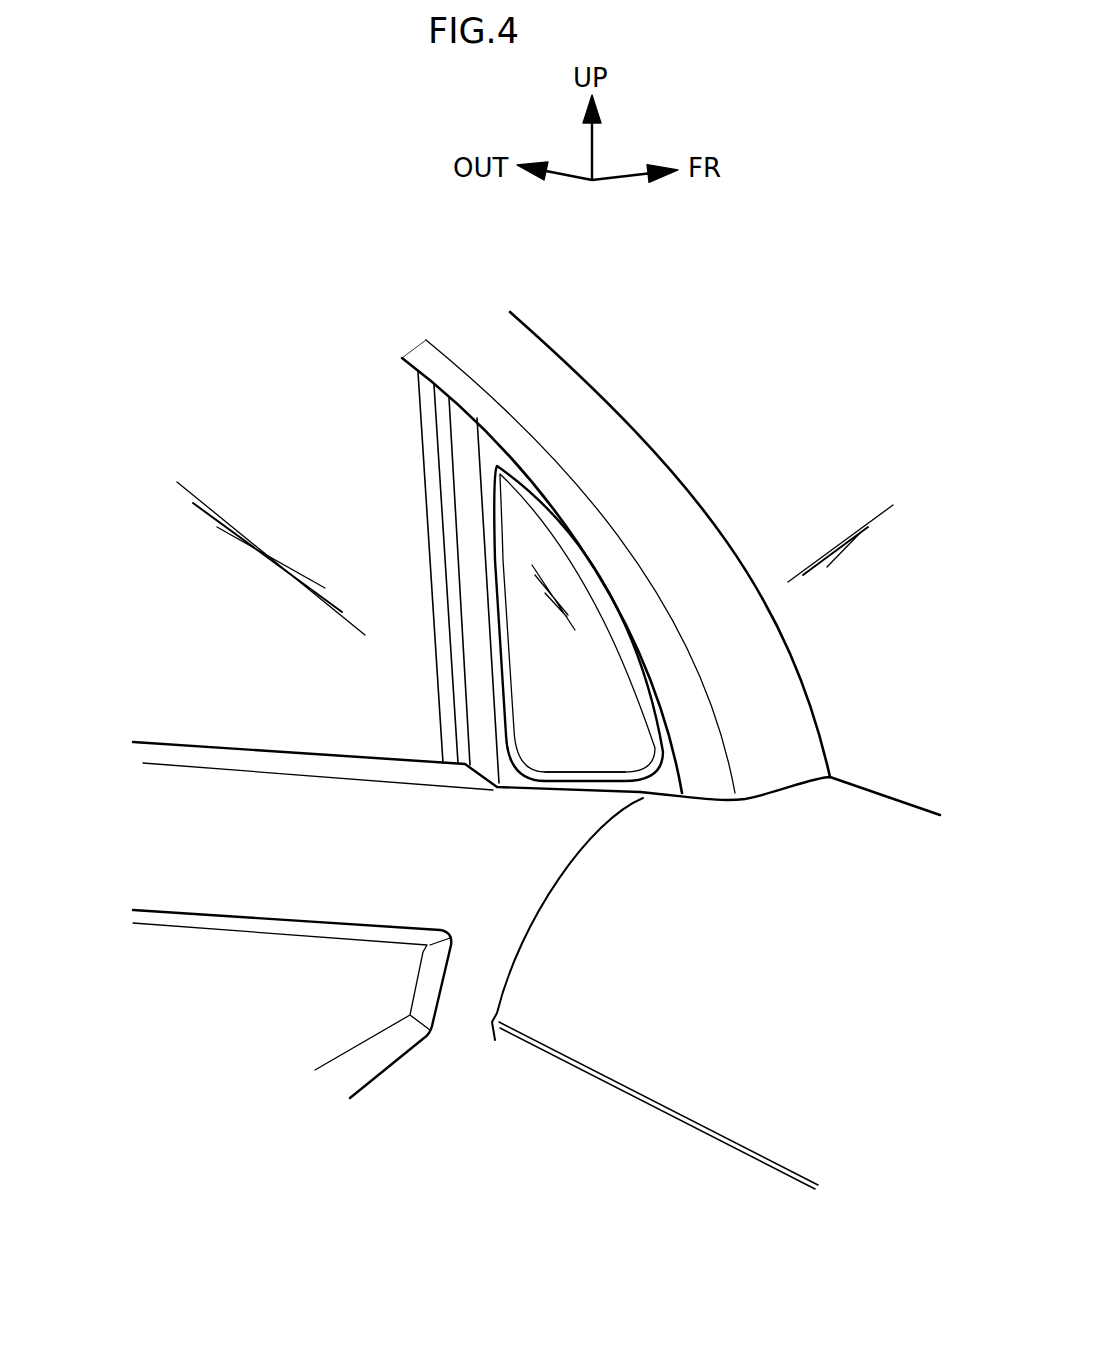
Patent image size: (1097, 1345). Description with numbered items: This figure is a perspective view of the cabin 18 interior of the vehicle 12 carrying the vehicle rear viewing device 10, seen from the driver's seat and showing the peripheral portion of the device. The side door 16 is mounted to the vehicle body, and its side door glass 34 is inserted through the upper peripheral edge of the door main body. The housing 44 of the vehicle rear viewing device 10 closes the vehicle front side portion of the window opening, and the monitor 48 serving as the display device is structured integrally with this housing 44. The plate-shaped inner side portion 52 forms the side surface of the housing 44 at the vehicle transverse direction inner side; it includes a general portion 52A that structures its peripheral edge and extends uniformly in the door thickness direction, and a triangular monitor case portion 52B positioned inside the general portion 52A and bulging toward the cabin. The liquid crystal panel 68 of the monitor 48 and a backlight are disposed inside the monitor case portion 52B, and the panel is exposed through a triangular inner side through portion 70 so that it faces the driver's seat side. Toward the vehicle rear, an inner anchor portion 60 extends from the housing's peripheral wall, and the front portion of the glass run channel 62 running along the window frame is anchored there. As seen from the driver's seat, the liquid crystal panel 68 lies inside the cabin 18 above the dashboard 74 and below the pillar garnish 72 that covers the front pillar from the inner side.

The vehicle rear viewing device 10 is at (550, 437).
The vehicle 12 is at (785, 307).
The side door 16 is at (173, 660).
The cabin 18 is at (308, 1169).
The side door glass 34 is at (287, 438).
The housing 44 is at (502, 433).
The monitor 48 is at (643, 803).
The inner side portion 52 is at (592, 563).
The general portion 52A is at (635, 639).
The monitor case portion 52B is at (570, 793).
The inner anchor portion 60 is at (437, 507).
The glass run channel 62 is at (428, 430).
The liquid crystal panel 68 is at (607, 708).
The inner side through portion 70 is at (512, 668).
The pillar garnish 72 is at (618, 457).
The dashboard 74 is at (843, 830).